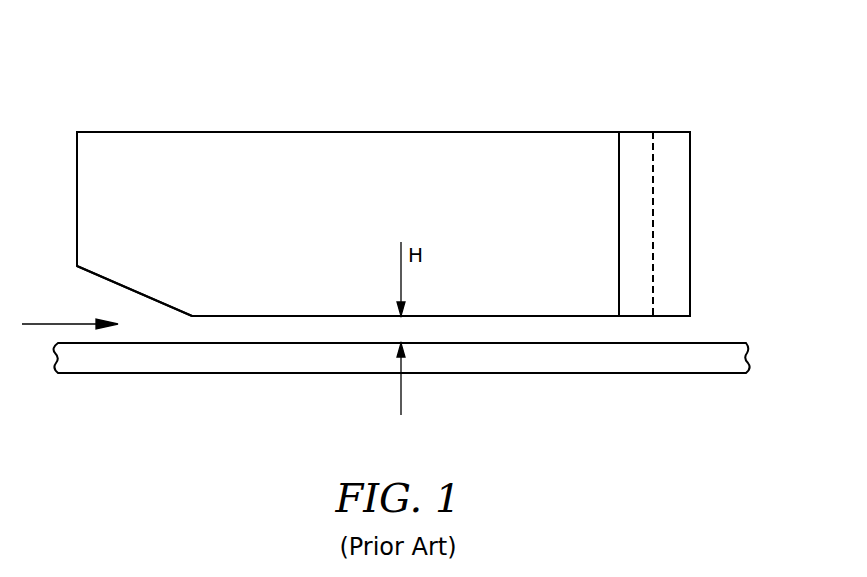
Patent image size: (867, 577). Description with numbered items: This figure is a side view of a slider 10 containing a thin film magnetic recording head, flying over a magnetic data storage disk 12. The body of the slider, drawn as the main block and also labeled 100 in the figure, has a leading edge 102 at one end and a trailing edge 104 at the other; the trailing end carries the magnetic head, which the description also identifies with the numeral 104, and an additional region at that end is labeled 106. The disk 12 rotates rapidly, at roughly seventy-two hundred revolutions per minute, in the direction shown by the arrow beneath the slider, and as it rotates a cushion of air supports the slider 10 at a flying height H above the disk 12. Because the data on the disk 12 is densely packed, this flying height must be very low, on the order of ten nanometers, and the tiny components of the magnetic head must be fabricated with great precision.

The slider 10 is at (523, 93).
The magnetic data storage disk 12 is at (662, 374).
The slider 100 is at (164, 183).
The leading edge 102 is at (147, 296).
The trailing edge 104 is at (691, 172).
The trailing edge region 106 is at (690, 262).